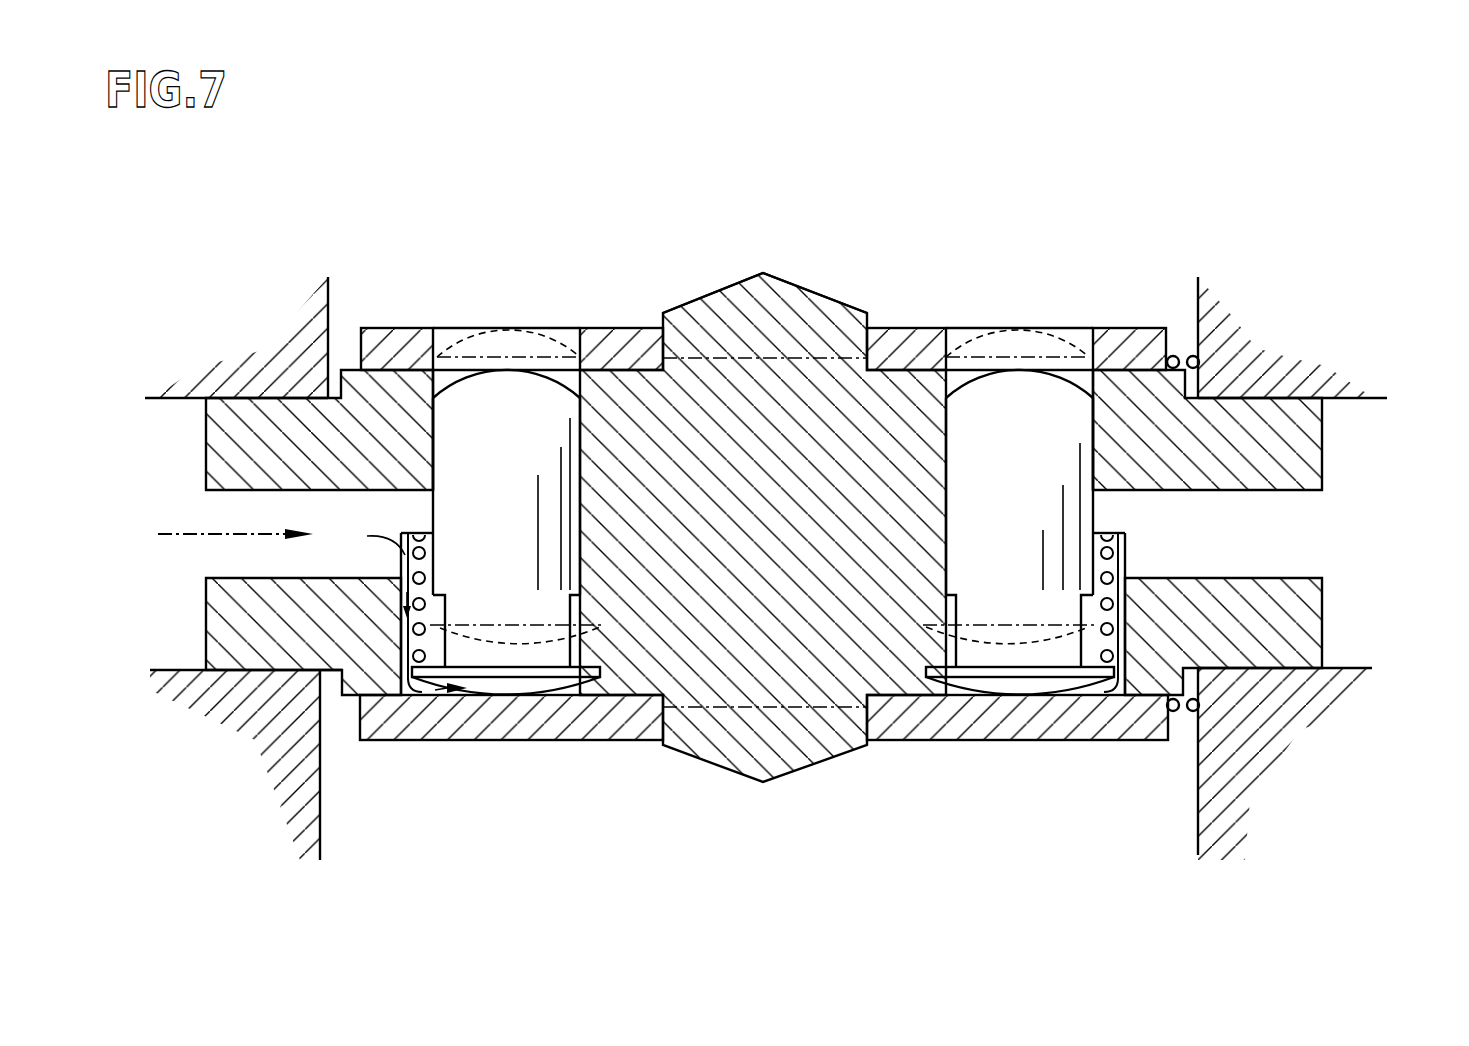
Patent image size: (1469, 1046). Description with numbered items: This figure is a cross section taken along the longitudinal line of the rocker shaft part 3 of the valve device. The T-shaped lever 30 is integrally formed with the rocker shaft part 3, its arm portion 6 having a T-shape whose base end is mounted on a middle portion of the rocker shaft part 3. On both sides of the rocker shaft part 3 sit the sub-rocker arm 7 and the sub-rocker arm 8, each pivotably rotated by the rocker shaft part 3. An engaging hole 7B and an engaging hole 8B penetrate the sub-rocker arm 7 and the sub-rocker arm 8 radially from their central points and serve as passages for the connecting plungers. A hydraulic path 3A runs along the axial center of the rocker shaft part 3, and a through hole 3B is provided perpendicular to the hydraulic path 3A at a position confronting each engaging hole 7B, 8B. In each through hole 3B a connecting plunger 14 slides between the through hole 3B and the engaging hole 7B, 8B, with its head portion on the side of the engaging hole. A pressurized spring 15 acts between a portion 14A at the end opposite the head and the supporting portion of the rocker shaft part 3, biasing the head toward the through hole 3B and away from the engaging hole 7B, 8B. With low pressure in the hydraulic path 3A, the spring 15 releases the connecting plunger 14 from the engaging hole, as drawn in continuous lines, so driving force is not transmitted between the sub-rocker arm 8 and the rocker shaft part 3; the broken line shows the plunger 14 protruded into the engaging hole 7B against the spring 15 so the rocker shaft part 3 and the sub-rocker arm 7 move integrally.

The rocker shaft part 3 is at (223, 630).
The hydraulic path 3A is at (255, 565).
The through hole 3B is at (447, 417).
The arm portion 6 is at (724, 770).
The sub-rocker arm 7 is at (600, 345).
The engaging hole 7B is at (498, 357).
The sub-rocker arm 8 is at (905, 345).
The engaging hole 8B is at (1000, 343).
The connecting plunger 14 is at (511, 492).
The portion 14A is at (485, 665).
The pressurized spring 15 is at (410, 665).
The T-shaped lever 30 is at (794, 262).